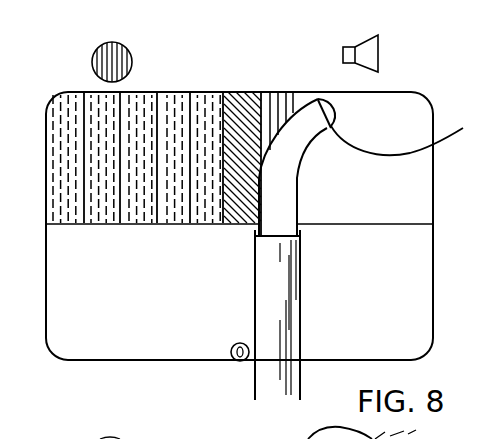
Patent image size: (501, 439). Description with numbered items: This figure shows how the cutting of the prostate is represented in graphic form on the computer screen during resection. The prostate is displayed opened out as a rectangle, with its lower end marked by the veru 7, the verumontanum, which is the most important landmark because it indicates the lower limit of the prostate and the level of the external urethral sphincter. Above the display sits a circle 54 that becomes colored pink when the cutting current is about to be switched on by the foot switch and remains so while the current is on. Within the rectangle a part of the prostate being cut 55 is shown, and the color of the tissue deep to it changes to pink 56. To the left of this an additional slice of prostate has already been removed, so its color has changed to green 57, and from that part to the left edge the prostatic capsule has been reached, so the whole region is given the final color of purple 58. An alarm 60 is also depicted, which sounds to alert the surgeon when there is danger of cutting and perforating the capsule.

The veru 7 is at (232, 348).
The circle 54 is at (100, 48).
The part of the prostate being cut 55 is at (409, 133).
The pink region 56 is at (277, 102).
The green region 57 is at (244, 104).
The purple region 58 is at (205, 103).
The alarm 60 is at (368, 45).